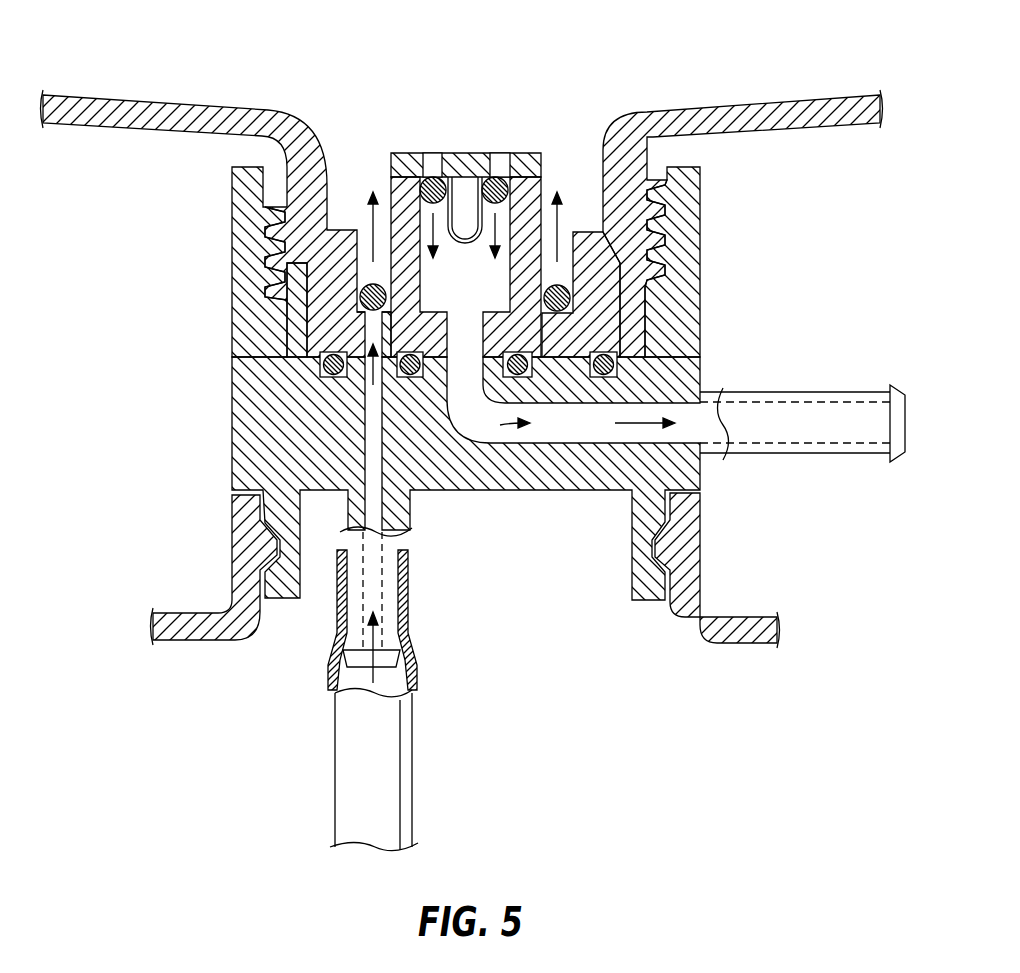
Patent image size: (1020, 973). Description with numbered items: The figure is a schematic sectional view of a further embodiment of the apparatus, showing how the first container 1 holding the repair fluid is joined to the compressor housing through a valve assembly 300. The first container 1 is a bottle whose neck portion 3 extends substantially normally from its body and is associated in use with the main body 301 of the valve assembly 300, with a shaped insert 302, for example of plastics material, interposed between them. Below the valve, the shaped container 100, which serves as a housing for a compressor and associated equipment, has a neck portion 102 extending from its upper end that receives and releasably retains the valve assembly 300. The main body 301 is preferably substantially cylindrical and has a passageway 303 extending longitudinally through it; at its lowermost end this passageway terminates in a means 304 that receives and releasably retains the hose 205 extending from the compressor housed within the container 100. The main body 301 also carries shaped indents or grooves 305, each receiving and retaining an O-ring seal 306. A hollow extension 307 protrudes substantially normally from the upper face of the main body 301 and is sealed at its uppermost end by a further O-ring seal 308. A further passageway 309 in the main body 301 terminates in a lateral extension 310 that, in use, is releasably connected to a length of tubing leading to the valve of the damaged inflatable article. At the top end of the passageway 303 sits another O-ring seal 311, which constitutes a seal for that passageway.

The first container 1 is at (160, 151).
The neck portion 3 is at (630, 212).
The shaped container 100 is at (192, 601).
The neck portion 102 is at (698, 530).
The hose 205 is at (390, 762).
The valve assembly 300 is at (202, 343).
The main body 301 is at (672, 318).
The shaped insert 302 is at (610, 292).
The passageway 303 is at (375, 438).
The means adapted to receive the hose 304 is at (412, 583).
The shaped indents or grooves 305 is at (612, 376).
The O-ring seal 306 is at (330, 378).
The hollow extension 307 is at (403, 192).
The further O-ring seal 308 is at (466, 180).
The further passageway 309 is at (585, 440).
The lateral extension 310 is at (822, 430).
The O-ring seal 311 is at (365, 288).